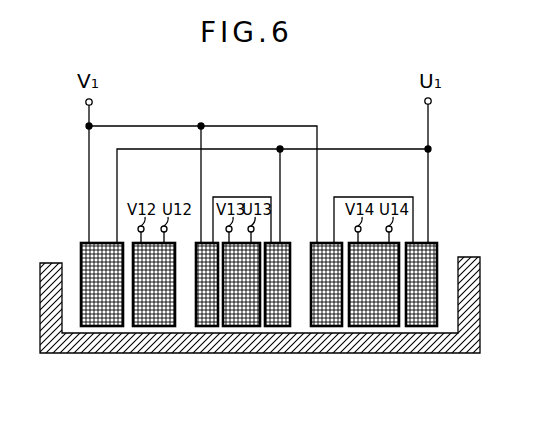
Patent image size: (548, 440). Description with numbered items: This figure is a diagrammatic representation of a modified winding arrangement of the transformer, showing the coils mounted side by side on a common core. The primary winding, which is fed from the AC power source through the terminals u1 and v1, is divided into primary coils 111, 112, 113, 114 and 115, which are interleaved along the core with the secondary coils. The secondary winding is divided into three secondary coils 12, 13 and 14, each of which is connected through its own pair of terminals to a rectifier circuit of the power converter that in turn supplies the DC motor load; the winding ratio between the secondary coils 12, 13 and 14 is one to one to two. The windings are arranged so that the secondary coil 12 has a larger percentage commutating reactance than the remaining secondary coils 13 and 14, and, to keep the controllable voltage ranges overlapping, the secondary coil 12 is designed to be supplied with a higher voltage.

The primary coil 111 is at (102, 326).
The secondary coil 12 is at (156, 326).
The primary coil 112 is at (208, 326).
The secondary coil 13 is at (244, 326).
The primary coil 113 is at (280, 326).
The primary coil 114 is at (326, 326).
The secondary coil 14 is at (373, 326).
The primary coil 115 is at (421, 326).